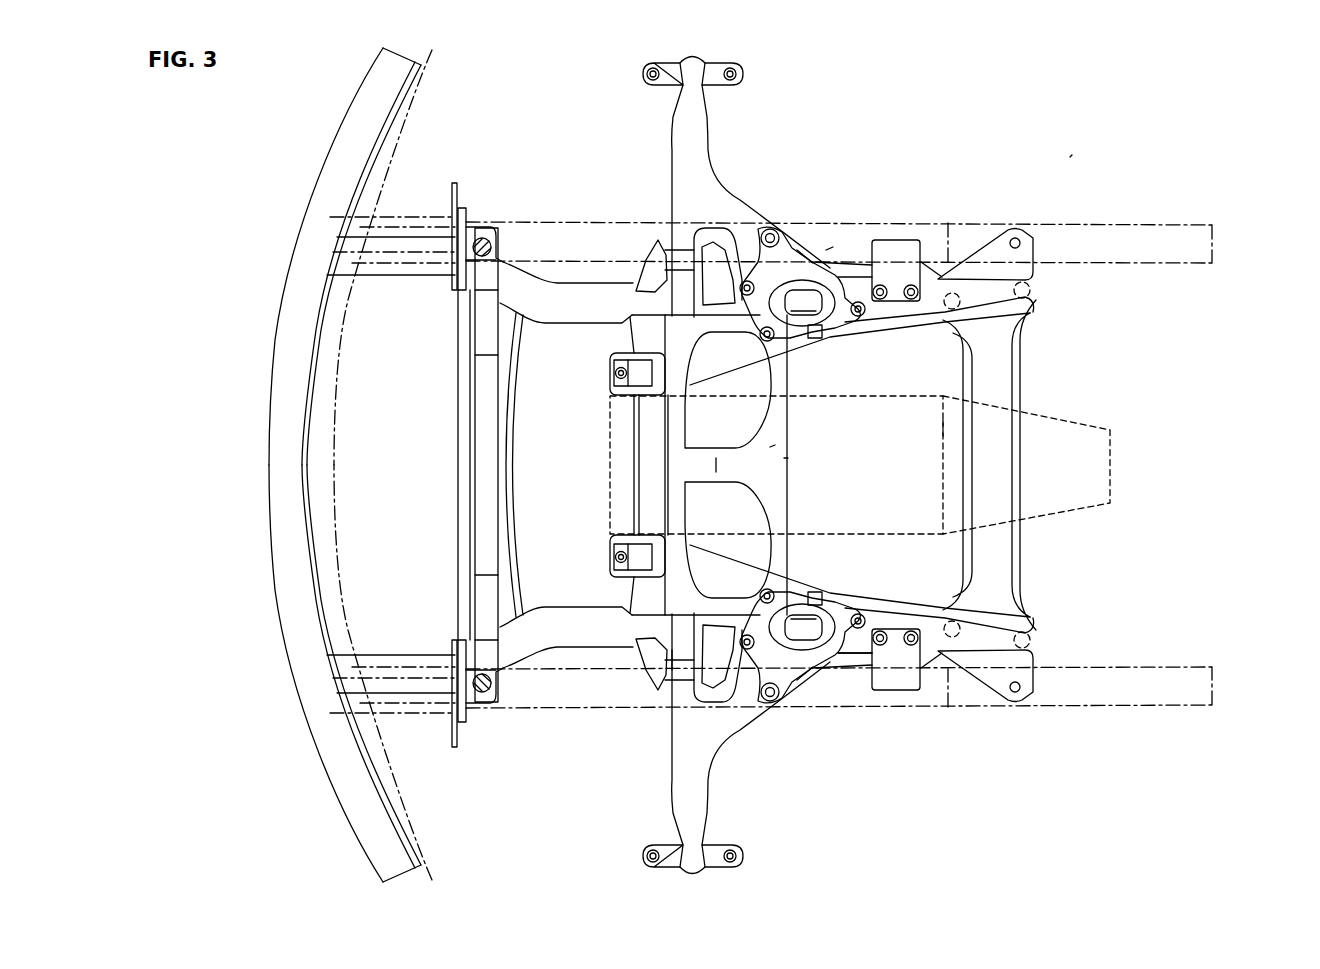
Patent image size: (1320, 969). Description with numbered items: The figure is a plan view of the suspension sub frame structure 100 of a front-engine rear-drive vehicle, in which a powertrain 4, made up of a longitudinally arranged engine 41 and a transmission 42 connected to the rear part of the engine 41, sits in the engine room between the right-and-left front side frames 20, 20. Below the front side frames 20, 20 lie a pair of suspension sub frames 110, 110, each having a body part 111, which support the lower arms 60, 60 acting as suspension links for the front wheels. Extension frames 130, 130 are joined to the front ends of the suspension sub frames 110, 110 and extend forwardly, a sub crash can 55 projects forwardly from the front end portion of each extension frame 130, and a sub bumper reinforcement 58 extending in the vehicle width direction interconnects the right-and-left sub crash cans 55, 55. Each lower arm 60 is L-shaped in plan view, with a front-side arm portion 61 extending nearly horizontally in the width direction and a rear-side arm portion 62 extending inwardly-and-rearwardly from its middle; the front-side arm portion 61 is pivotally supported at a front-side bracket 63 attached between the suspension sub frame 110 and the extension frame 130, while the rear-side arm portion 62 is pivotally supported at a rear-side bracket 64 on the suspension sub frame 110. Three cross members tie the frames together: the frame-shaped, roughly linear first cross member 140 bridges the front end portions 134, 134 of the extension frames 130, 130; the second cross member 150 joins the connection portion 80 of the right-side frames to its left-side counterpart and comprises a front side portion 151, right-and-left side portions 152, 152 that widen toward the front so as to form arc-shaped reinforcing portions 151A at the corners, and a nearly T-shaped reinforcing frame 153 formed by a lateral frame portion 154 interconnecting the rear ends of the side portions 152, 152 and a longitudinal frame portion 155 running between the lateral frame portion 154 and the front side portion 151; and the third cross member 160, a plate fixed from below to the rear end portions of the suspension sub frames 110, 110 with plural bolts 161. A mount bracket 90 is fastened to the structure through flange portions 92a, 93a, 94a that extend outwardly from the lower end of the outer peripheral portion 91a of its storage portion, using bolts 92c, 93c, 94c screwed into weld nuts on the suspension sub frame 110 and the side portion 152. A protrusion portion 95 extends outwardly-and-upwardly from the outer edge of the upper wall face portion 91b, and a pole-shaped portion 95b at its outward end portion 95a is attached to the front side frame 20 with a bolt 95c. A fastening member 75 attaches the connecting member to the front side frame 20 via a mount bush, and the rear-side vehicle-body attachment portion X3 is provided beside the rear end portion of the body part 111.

The powertrain 4 is at (881, 463).
The front side frame 20 is at (1173, 265).
The engine 41 is at (925, 474).
The transmission 42 is at (1080, 474).
The sub crash can 55 is at (413, 237).
The sub bumper reinforcement 58 is at (274, 408).
The lower arm 60 is at (712, 125).
The front-side arm portion 61 is at (680, 735).
The rear-side arm portion 62 is at (860, 680).
The front-side bracket 63 is at (650, 258).
The rear-side bracket 64 is at (900, 248).
The fastening member 75 is at (486, 238).
The connection portion 80 is at (683, 632).
The mount bracket 90 is at (838, 240).
The outer peripheral portion 91a is at (823, 251).
The upper wall face portion 91b is at (806, 326).
The flange portion 92a is at (746, 245).
The bolt 92c is at (715, 243).
The flange portion 93a is at (885, 484).
The bolt 93c is at (862, 318).
The flange portion 94a is at (790, 333).
The bolt 94c is at (766, 342).
The protrusion portion 95 is at (818, 253).
The outward end portion 95a is at (750, 280).
The pole-shaped portion 95b is at (778, 246).
The bolt 95c is at (786, 252).
The suspension sub frame structure 100 is at (1070, 158).
The suspension sub frame 110 is at (929, 330).
The body part 111 is at (900, 316).
The extension frame 130 is at (562, 281).
The front end portion 134 is at (505, 262).
The first cross member 140 is at (466, 465).
The second cross member 150 is at (636, 469).
The front side portion 151 is at (634, 430).
The reinforcing portion 151A is at (689, 378).
The side portion 152 is at (672, 325).
The reinforcing frame 153 is at (772, 450).
The lateral frame portion 154 is at (787, 457).
The longitudinal frame portion 155 is at (716, 472).
The third cross member 160 is at (1026, 360).
The bolt 161 is at (1000, 306).
The rear-side vehicle-body attachment portion X3 is at (1010, 229).